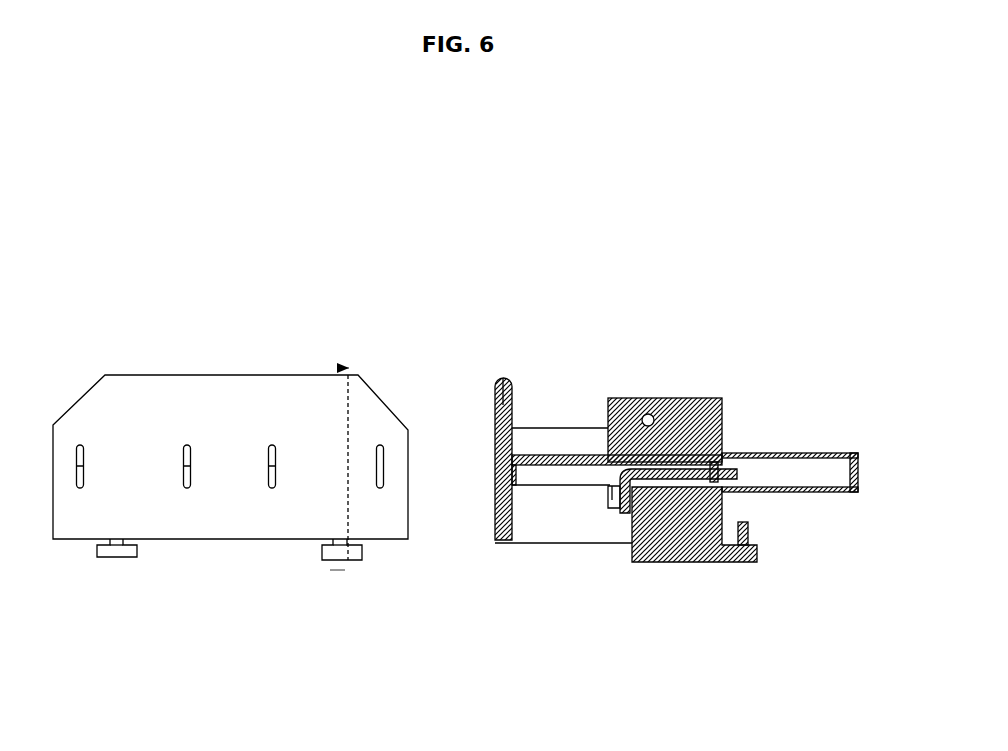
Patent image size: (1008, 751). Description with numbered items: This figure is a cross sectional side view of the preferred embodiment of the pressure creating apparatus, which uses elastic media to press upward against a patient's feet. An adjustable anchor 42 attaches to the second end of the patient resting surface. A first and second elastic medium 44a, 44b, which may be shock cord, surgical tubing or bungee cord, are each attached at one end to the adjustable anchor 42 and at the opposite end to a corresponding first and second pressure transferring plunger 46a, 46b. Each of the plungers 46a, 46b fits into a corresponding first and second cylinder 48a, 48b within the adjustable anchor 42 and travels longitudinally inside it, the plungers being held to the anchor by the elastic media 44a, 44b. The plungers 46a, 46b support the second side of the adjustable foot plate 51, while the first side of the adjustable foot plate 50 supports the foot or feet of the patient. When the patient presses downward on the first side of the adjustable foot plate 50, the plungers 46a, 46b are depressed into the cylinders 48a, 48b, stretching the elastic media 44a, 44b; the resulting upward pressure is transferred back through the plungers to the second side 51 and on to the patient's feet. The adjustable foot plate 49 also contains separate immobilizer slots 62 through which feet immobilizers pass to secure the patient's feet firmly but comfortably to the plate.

The adjustable anchor 42 is at (102, 552).
The first elastic medium 44a is at (623, 598).
The second elastic medium 44b is at (622, 516).
The first pressure transferring plunger 46a is at (604, 564).
The second pressure transferring plunger 46b is at (530, 468).
The first cylinder 48a is at (756, 412).
The second cylinder 48b is at (812, 462).
The adjustable foot plate 49 is at (493, 368).
The first side of the adjustable foot plate 50 is at (253, 403).
The second side of the adjustable foot plate 51 is at (515, 405).
The immobilizer slots 62 is at (85, 495).